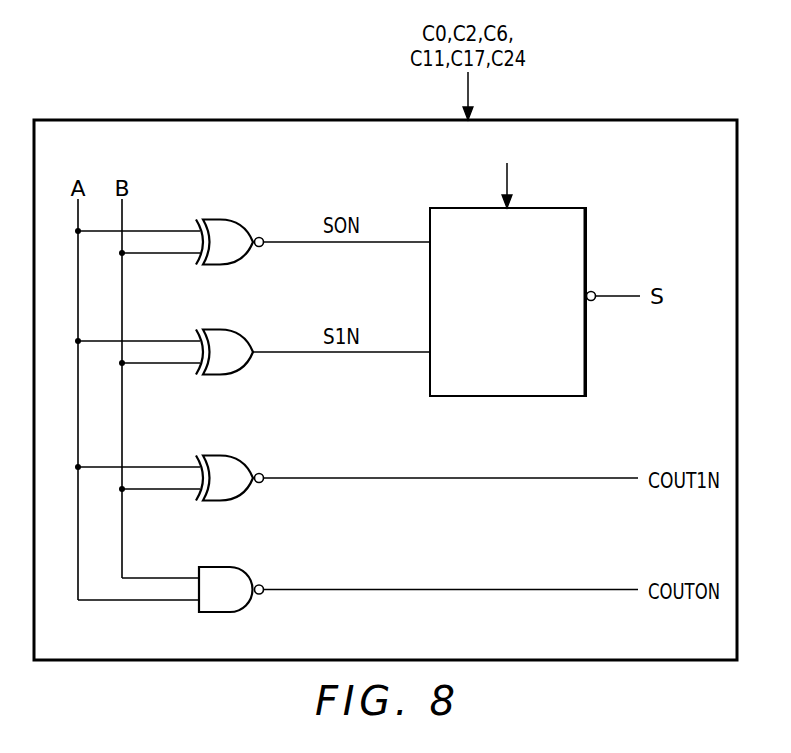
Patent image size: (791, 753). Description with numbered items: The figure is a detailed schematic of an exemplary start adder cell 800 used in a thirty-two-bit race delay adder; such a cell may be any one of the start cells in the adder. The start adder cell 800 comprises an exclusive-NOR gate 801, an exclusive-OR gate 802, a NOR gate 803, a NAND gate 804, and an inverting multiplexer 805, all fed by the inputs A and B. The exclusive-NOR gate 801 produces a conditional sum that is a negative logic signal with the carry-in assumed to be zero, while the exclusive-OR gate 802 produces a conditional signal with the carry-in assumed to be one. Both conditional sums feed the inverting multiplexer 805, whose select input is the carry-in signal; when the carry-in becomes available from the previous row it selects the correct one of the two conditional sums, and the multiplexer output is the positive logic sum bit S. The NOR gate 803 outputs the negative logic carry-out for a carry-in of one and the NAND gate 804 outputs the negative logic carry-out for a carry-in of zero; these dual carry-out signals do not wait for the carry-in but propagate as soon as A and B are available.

The start adder cell 800 is at (688, 120).
The exclusive-NOR (XNOR) gate 801 is at (240, 262).
The exclusive-OR (XOR) gate 802 is at (238, 373).
The NOR gate 803 is at (242, 497).
The NAND gate 804 is at (246, 608).
The inverting multiplexer (MUX) 805 is at (587, 238).